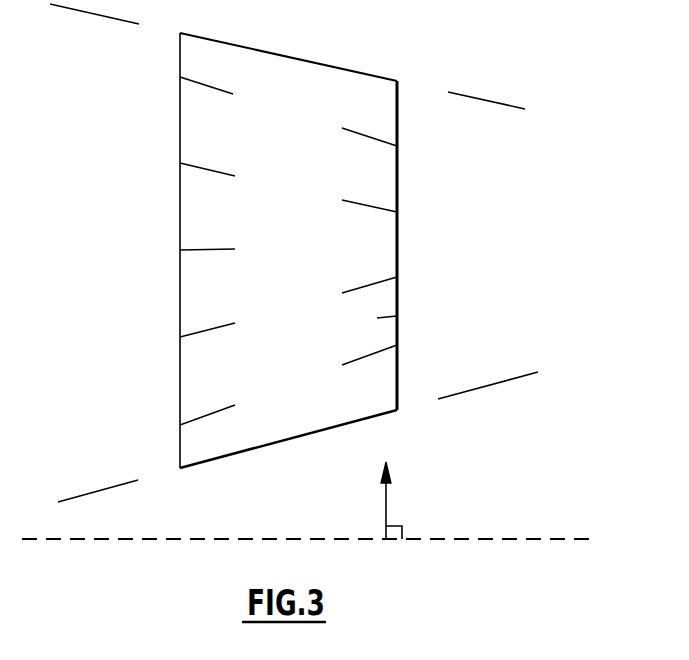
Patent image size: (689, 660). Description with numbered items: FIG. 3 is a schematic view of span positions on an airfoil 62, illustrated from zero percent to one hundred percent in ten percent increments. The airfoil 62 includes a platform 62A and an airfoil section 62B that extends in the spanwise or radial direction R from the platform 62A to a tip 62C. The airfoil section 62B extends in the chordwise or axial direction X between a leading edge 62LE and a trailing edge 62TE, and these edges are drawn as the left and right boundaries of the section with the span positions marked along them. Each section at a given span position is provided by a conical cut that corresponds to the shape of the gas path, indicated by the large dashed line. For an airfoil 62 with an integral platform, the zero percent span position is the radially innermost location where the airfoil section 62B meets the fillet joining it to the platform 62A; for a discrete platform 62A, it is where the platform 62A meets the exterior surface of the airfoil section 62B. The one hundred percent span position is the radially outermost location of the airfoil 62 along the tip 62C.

The airfoil 62 is at (308, 254).
The platform 62A is at (288, 442).
The airfoil section 62B is at (397, 316).
The tip 62C is at (290, 56).
The leading edge 62LE is at (180, 212).
The trailing edge 62TE is at (397, 247).
The radial direction R is at (386, 502).
The axial direction X is at (558, 539).